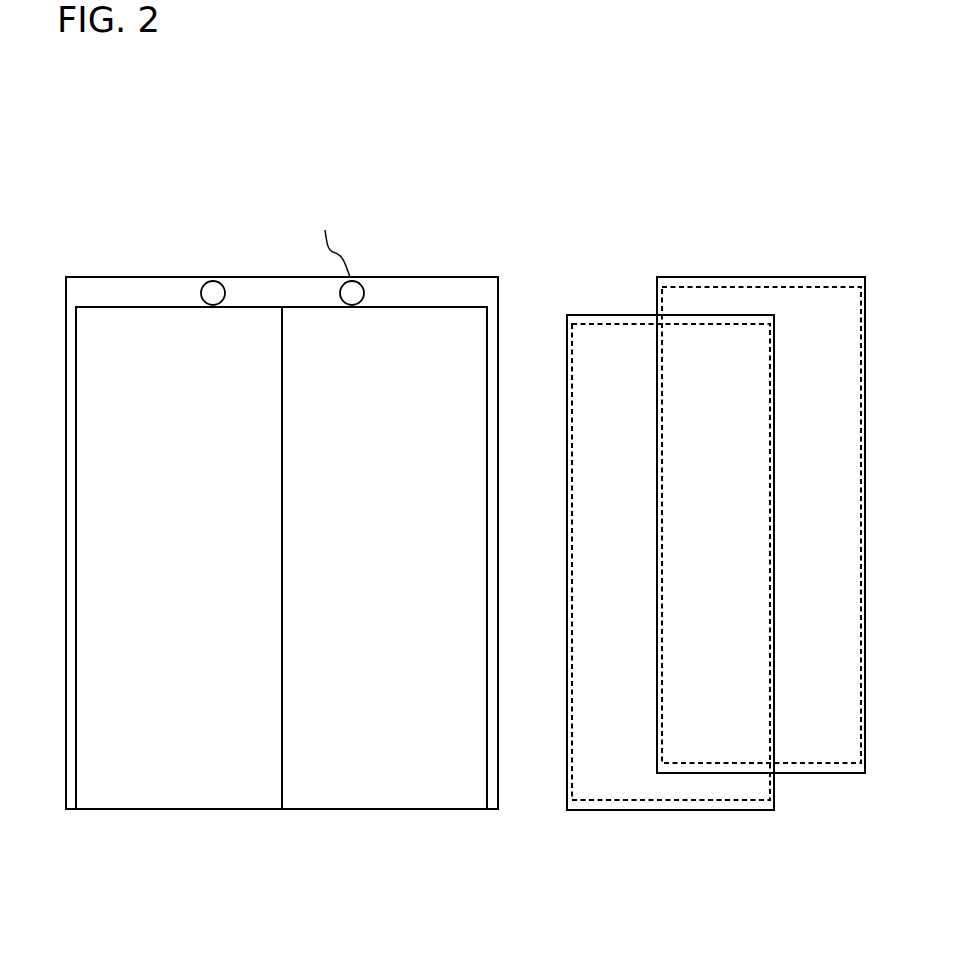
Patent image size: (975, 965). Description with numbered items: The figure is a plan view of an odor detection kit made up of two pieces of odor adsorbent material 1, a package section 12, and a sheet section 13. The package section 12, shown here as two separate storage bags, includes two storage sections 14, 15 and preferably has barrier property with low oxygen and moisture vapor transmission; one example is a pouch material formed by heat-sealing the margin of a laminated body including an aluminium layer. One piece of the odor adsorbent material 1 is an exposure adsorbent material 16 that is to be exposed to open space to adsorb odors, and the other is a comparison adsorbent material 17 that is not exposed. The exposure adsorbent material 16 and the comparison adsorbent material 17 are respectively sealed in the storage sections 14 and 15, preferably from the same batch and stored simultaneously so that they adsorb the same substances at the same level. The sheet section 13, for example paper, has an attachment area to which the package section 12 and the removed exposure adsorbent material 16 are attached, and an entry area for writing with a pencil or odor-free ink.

The odor adsorbent material 1 is at (657, 192).
The package section 12 is at (716, 571).
The sheet section 13 is at (183, 277).
The storage section 14 is at (674, 550).
The storage section 15 is at (761, 550).
The exposure adsorbent material 16 is at (625, 324).
The comparison adsorbent material 17 is at (694, 287).